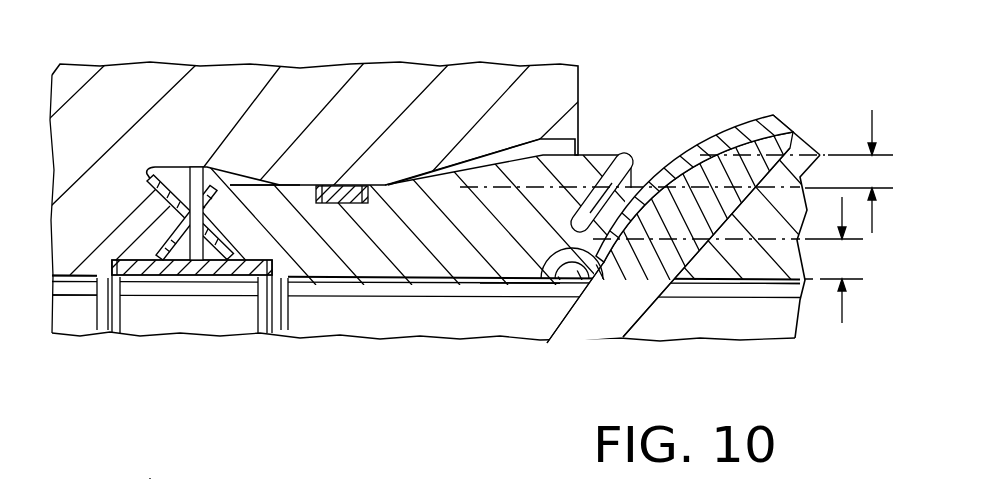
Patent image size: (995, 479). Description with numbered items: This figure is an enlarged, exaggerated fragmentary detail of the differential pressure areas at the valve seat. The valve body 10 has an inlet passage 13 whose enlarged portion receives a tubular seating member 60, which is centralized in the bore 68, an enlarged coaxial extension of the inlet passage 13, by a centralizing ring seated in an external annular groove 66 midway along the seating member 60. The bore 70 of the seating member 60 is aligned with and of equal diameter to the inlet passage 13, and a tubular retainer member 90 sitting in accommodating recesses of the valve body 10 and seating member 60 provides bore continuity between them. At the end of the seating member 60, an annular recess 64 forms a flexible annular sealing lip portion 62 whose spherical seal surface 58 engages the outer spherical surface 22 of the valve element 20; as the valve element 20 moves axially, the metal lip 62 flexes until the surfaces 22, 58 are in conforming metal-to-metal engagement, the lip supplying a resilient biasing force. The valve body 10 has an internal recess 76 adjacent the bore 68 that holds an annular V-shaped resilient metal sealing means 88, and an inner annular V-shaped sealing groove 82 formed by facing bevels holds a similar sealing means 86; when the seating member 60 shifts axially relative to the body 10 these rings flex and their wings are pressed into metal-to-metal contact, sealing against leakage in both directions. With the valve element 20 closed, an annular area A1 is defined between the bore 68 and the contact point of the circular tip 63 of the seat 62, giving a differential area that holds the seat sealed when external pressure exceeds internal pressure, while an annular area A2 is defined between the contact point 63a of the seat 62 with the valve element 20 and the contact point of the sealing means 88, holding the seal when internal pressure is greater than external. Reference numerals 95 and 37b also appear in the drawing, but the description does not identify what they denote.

The valve body 10 is at (122, 127).
The inlet passage 13 is at (72, 279).
The valve element 20 is at (720, 240).
The outer spherical surface 22 is at (533, 285).
The annular spherical seal surface 58 is at (673, 225).
The tubular seating member 60 is at (435, 249).
The annular sealing lip portion 62 is at (673, 157).
The top of the lip 63 is at (693, 157).
The contact point of the seat 63a is at (557, 284).
The annular recess 64 is at (592, 218).
The external annular groove 66 is at (341, 195).
The bore 68 is at (297, 187).
The bore of the seating member 70 is at (386, 283).
The internal recess 76 is at (209, 166).
The inner annular V-shaped sealing groove 82 is at (203, 250).
The resilient metal sealing means 86 is at (197, 205).
The resilient metal sealing means 88 is at (190, 222).
The tubular retainer member 90 is at (163, 268).
The plate edge 95 is at (771, 285).
The annular area A1 is at (849, 171).
The annular area A2 is at (834, 260).
The element 37b is at (158, 473).